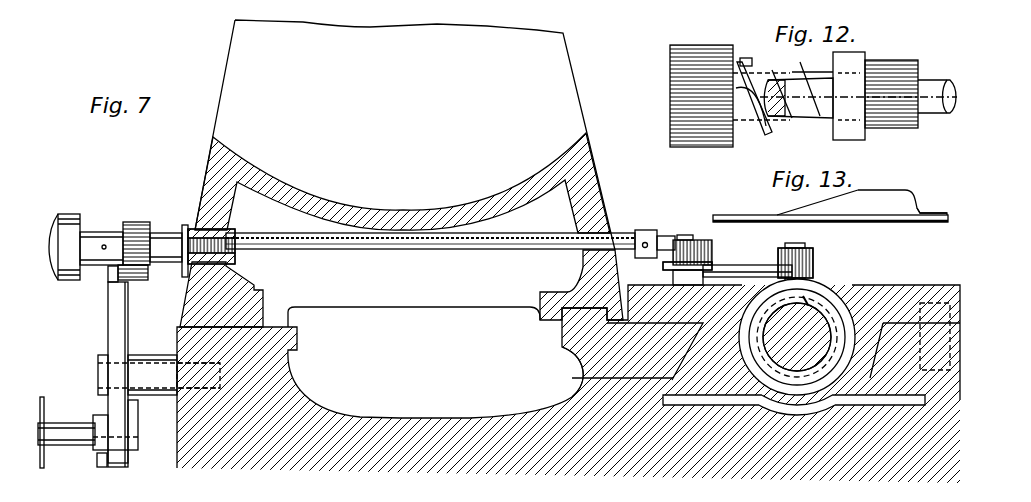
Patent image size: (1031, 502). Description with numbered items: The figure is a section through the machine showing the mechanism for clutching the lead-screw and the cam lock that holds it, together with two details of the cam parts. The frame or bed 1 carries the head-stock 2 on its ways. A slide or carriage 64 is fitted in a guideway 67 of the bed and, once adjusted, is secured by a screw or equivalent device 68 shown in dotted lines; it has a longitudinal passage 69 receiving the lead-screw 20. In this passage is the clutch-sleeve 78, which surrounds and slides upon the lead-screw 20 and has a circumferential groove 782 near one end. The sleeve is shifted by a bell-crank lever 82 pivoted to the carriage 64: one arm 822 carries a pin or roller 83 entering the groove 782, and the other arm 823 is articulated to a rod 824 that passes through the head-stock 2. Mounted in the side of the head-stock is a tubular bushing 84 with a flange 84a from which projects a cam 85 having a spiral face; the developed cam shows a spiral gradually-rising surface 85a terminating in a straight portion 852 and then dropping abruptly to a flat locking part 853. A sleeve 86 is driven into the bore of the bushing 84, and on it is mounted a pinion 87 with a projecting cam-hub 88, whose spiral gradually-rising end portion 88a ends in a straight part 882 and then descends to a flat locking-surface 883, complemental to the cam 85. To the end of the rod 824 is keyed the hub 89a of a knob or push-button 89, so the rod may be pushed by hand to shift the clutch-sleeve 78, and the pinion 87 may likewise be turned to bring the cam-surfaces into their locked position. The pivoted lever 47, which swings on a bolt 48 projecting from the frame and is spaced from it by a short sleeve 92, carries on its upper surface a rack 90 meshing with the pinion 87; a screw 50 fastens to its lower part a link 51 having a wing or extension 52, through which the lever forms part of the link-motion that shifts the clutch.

In FIG. 7, the frame or bed 1 is at (363, 420).
In FIG. 7, the head 2 is at (401, 173).
In FIG. 7, the lead-screw 20 is at (815, 312).
In FIG. 7, the lever 47 is at (118, 324).
In FIG. 7, the bolt 48 is at (100, 366).
In FIG. 7, the screw 50 is at (72, 440).
In FIG. 7, the link 51 is at (96, 418).
In FIG. 7, the wing or extension 52 is at (104, 466).
In FIG. 7, the slide or carriage 64 is at (736, 272).
In FIG. 7, the guideway 67 is at (600, 378).
In FIG. 7, the screw or equivalent device 68 is at (925, 289).
In FIG. 7, the longitudinal passage 69 is at (900, 340).
In FIG. 7, the clutch-sleeve 78 is at (880, 372).
In FIG. 7, the groove 782 is at (817, 320).
In FIG. 7, the bell-crank lever 82 is at (715, 264).
In FIG. 7, the arm 822 is at (762, 268).
In FIG. 7, the arm 823 is at (688, 252).
In FIG. 7, the rod 824 is at (547, 231).
In FIG. 7, the pin or roller 83 is at (815, 276).
In FIG. 7, the tubular bushing 84 is at (228, 265).
In FIG. 12, the tubular bushing 84 is at (907, 62).
In FIG. 7, the flange 84a is at (183, 236).
In FIG. 12, the flange 84a is at (860, 56).
In FIG. 7, the cam 85 is at (166, 250).
In FIG. 12, the cam 85 is at (817, 128).
In FIG. 13, the cam 85 is at (830, 209).
In FIG. 13, the spiral gradually-rising surface 85a is at (808, 206).
In FIG. 13, the straight portion 852 is at (898, 189).
In FIG. 13, the flat locking part 853 is at (937, 215).
In FIG. 7, the sleeve 86 is at (233, 240).
In FIG. 12, the sleeve 86 is at (768, 95).
In FIG. 7, the pinion 87 is at (137, 230).
In FIG. 12, the pinion 87 is at (670, 100).
In FIG. 7, the cam-hub 88 is at (155, 280).
In FIG. 12, the cam-hub 88 is at (752, 124).
In FIG. 12, the spiral gradually-rising end portion 88a is at (750, 70).
In FIG. 12, the straight part 882 is at (785, 118).
In FIG. 12, the flat locking-surface 883 is at (740, 100).
In FIG. 7, the knob or push-button 89 is at (57, 221).
In FIG. 7, the hub 89a is at (101, 240).
In FIG. 7, the rack 90 is at (112, 270).
In FIG. 7, the short sleeve 92 is at (174, 375).